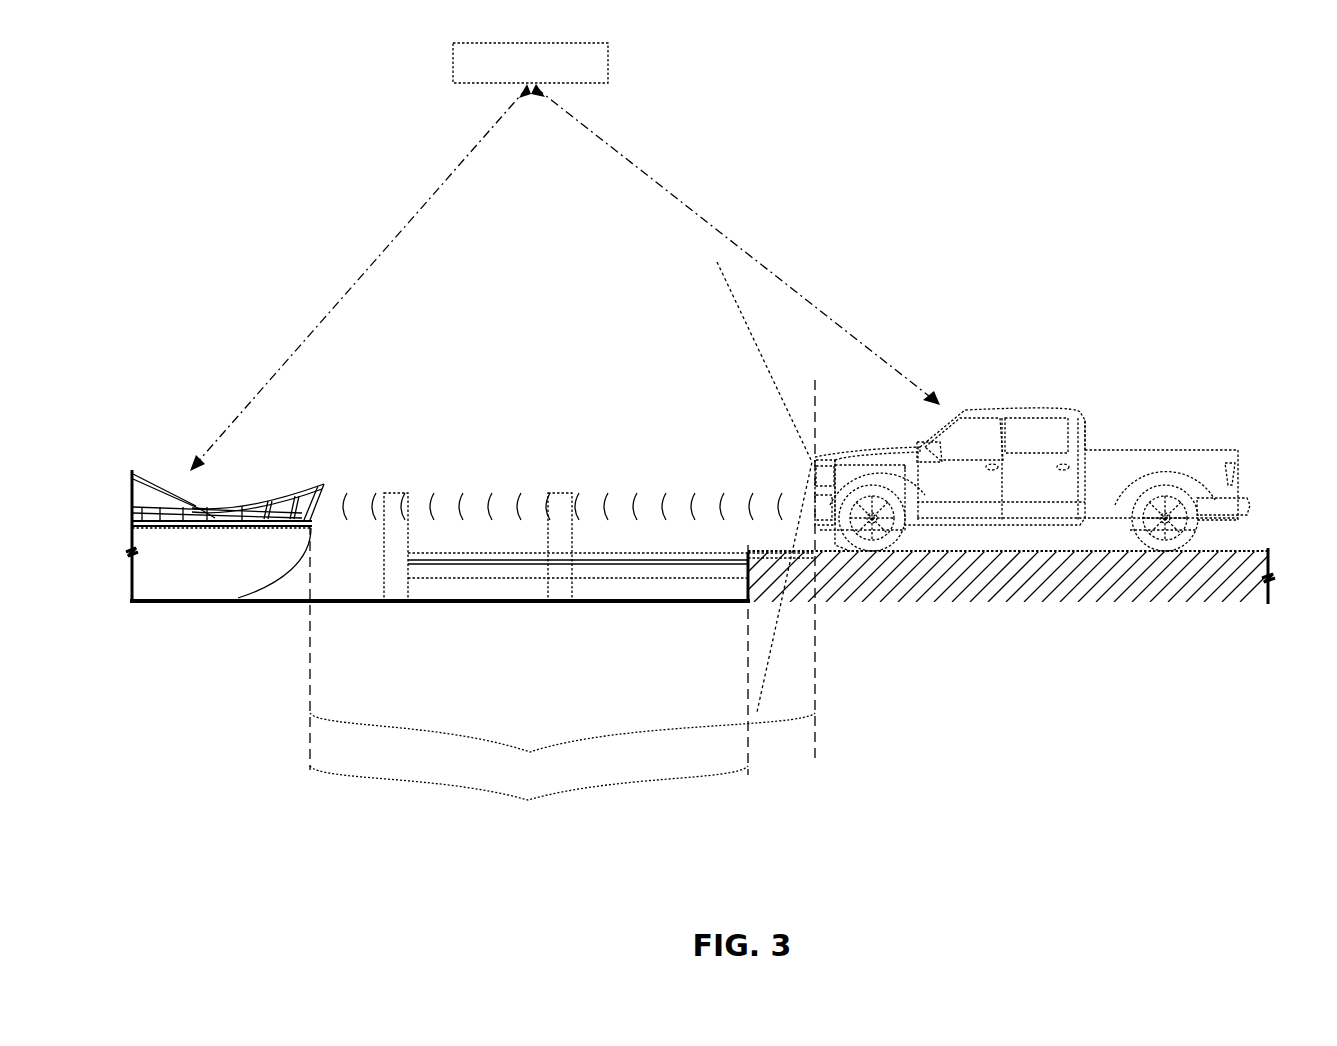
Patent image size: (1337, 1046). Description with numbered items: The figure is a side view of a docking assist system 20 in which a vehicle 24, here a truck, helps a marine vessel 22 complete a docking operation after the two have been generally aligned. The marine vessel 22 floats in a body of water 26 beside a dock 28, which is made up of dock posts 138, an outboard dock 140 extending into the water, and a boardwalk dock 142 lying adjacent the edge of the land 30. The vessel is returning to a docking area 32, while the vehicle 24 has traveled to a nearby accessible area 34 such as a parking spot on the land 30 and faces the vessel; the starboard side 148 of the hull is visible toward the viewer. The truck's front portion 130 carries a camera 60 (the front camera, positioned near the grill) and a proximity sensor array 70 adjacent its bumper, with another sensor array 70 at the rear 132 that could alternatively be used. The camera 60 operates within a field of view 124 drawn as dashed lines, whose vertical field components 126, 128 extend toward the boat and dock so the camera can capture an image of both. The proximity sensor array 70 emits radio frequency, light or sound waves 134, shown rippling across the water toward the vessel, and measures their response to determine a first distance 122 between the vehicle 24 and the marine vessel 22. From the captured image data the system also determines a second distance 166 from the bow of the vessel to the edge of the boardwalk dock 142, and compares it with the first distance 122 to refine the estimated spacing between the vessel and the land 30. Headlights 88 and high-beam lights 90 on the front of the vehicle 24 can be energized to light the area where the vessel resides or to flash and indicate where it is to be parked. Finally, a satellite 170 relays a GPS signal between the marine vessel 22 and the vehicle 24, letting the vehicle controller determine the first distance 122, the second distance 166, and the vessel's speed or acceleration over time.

The docking assist system 20 is at (952, 252).
The marine vessel 22 is at (154, 448).
The vehicle 24 is at (1050, 385).
The body of water 26 is at (326, 603).
The dock 28 is at (658, 603).
The land 30 is at (1082, 600).
The docking area 32 is at (650, 478).
The accessible area 34 is at (1280, 522).
The camera 60 is at (832, 462).
The proximity sensor array 70 is at (813, 504).
The headlights 88 is at (800, 457).
The high-beam lights 90 is at (809, 505).
The first distance 122 is at (562, 747).
The field of view 124 is at (768, 342).
The vertical field component 126 is at (722, 282).
The vertical field component 128 is at (766, 650).
The front portion 130 is at (832, 425).
The rear 132 is at (1258, 450).
The waves 134 is at (455, 480).
The dock posts 138 is at (398, 603).
The outboard dock 140 is at (466, 560).
The boardwalk dock 142 is at (800, 550).
The starboard side 148 is at (178, 572).
The second distance 166 is at (529, 800).
The satellite 170 is at (565, 257).